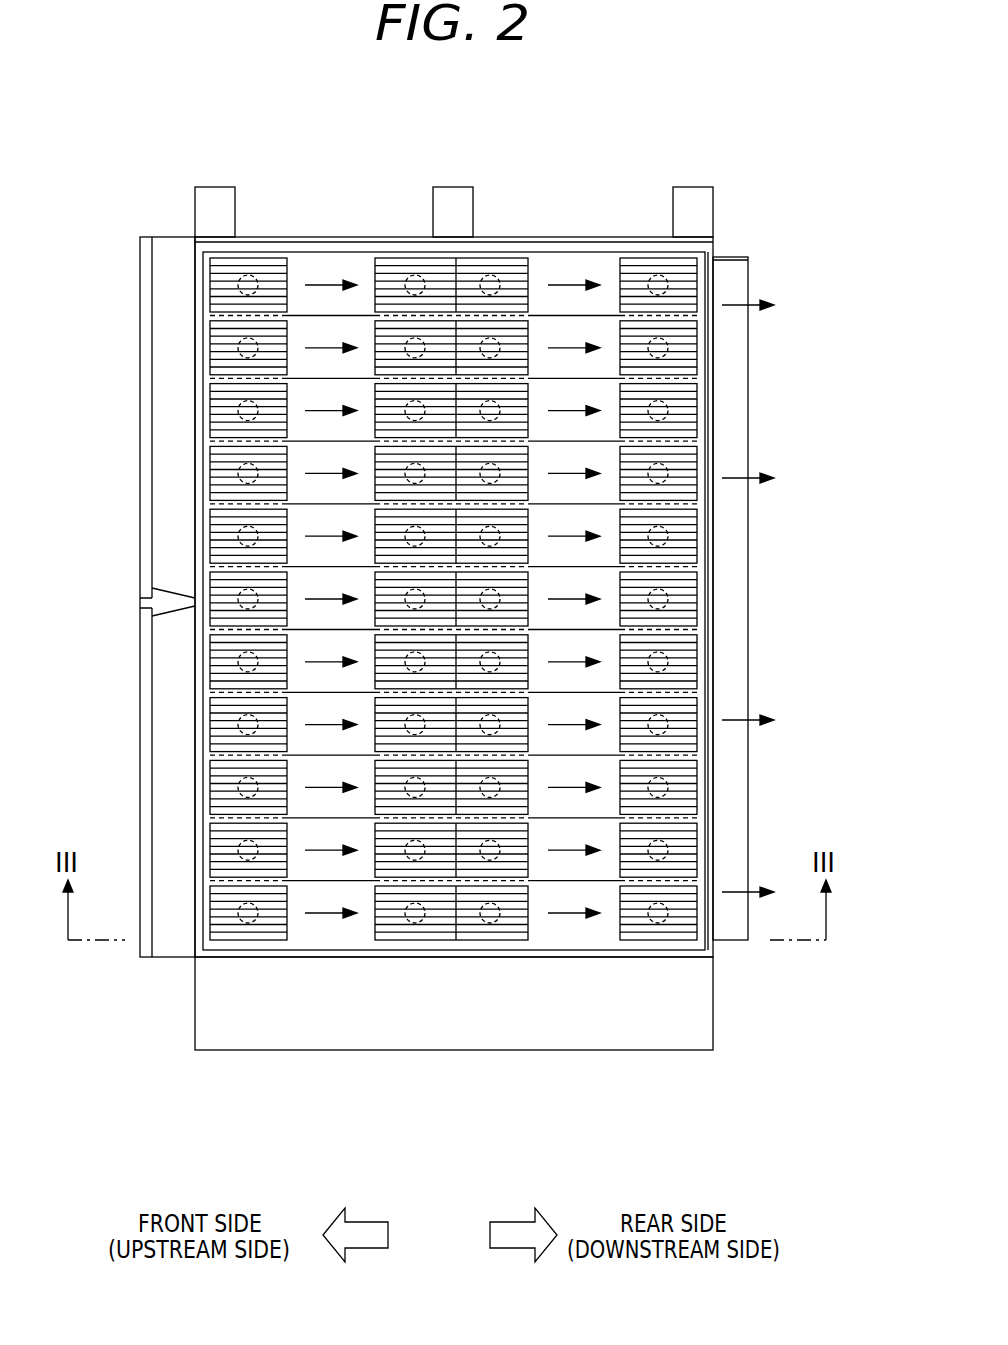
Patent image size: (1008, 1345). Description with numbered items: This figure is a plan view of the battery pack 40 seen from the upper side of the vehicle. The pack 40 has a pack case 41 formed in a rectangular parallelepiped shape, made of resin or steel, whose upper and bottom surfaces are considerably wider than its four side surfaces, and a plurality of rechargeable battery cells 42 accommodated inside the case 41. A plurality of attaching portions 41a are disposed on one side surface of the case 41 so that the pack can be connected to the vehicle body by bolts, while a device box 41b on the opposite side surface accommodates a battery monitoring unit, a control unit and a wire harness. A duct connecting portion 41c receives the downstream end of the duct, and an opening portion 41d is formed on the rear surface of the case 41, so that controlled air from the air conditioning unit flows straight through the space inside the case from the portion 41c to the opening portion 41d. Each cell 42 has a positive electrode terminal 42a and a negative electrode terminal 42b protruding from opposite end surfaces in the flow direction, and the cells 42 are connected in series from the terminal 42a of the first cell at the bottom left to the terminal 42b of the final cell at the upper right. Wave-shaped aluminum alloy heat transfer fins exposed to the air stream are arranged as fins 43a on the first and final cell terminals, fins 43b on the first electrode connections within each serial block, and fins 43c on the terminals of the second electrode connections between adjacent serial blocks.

The battery pack 40 is at (548, 226).
The pack case 41 is at (378, 240).
The attaching portions 41a is at (214, 192).
The device box 41b is at (313, 1052).
The duct connecting portion 41c is at (160, 412).
The opening portion 41d is at (750, 414).
The battery cells 42 is at (335, 268).
The positive electrode terminal 42a is at (508, 278).
The negative electrode terminal 42b is at (706, 278).
The heat transfer fins 43a is at (642, 265).
The heat transfer fins 43b is at (395, 265).
The heat transfer fins 43c is at (276, 265).